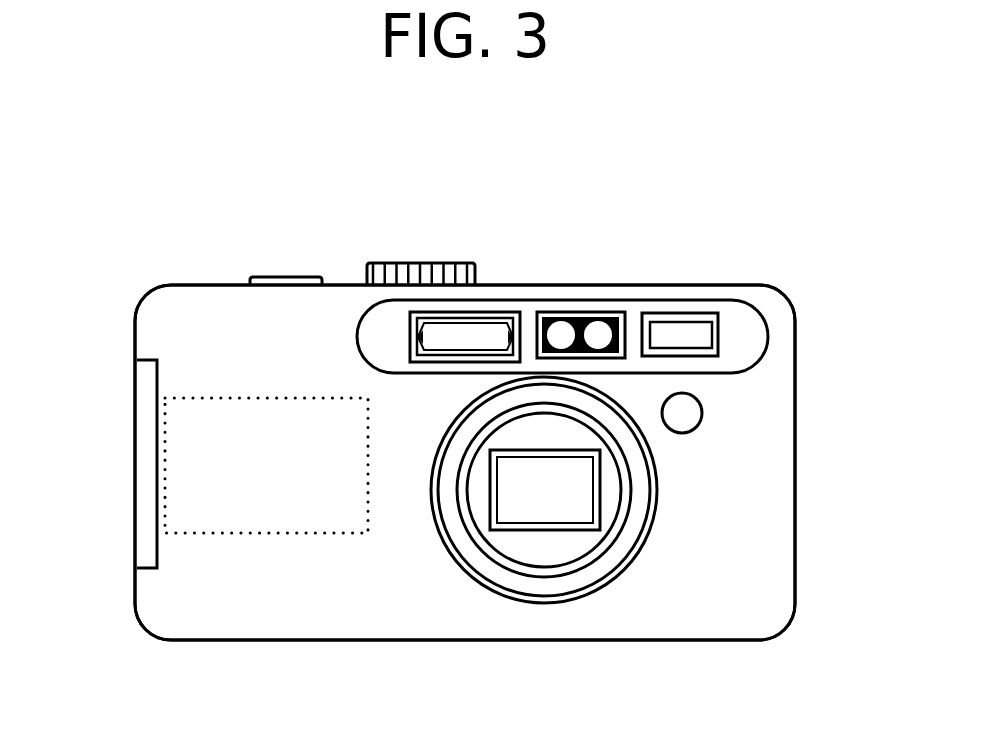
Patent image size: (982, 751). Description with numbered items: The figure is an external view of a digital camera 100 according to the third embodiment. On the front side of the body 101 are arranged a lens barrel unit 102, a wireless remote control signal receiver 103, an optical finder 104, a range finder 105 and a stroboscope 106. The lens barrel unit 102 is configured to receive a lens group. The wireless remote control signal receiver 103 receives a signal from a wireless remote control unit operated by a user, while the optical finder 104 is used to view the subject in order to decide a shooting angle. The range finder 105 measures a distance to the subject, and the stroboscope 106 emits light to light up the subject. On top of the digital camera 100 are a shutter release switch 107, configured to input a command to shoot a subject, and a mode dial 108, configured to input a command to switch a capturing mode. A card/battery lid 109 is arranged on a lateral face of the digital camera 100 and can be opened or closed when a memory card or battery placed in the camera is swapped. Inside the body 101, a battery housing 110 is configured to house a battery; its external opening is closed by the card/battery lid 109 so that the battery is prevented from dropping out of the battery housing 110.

The digital camera 100 is at (786, 217).
The body 101 is at (795, 513).
The lens barrel unit 102 is at (542, 557).
The wireless remote control signal receiver 103 is at (688, 419).
The optical finder 104 is at (678, 328).
The range finder 105 is at (583, 325).
The stroboscope 106 is at (498, 328).
The shutter release switch 107 is at (287, 278).
The mode dial 108 is at (420, 273).
The card/battery lid 109 is at (138, 472).
The battery housing 110 is at (278, 522).